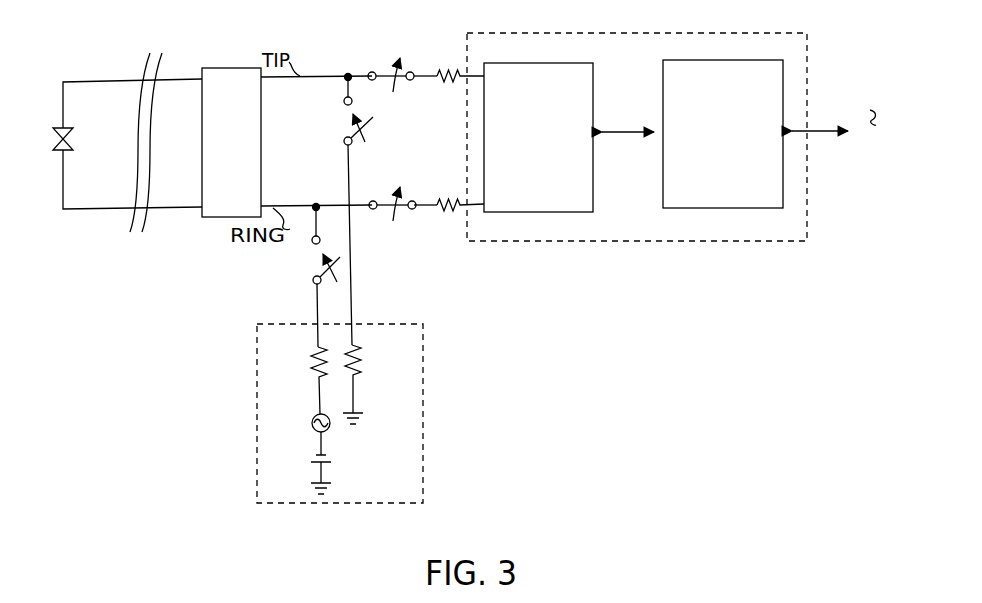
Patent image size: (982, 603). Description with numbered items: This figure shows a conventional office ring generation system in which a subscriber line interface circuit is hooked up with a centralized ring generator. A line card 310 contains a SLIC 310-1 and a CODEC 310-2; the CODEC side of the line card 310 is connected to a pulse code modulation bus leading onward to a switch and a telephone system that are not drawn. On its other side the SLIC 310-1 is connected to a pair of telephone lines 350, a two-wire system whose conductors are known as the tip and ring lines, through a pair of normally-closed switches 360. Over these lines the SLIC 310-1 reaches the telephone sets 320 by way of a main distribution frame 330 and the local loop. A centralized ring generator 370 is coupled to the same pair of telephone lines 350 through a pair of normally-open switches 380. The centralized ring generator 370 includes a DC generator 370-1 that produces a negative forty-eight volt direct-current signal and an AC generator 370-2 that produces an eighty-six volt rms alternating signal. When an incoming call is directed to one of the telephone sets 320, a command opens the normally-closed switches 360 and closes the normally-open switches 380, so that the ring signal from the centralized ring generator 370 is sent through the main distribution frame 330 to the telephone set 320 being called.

The line card 310 is at (671, 154).
The SLIC 310-1 is at (542, 212).
The CODEC 310-2 is at (715, 208).
The telephone sets 320 is at (75, 138).
The main distribution frame (MDF) 330 is at (218, 68).
The pair of telephone lines 350 is at (294, 204).
The pair of normally-closed switches 360 is at (385, 193).
The centralized ring generator 370 is at (377, 413).
The DC generator 370-1 is at (340, 461).
The AC generator 370-2 is at (312, 423).
The pair of normally-open switches 380 is at (316, 263).